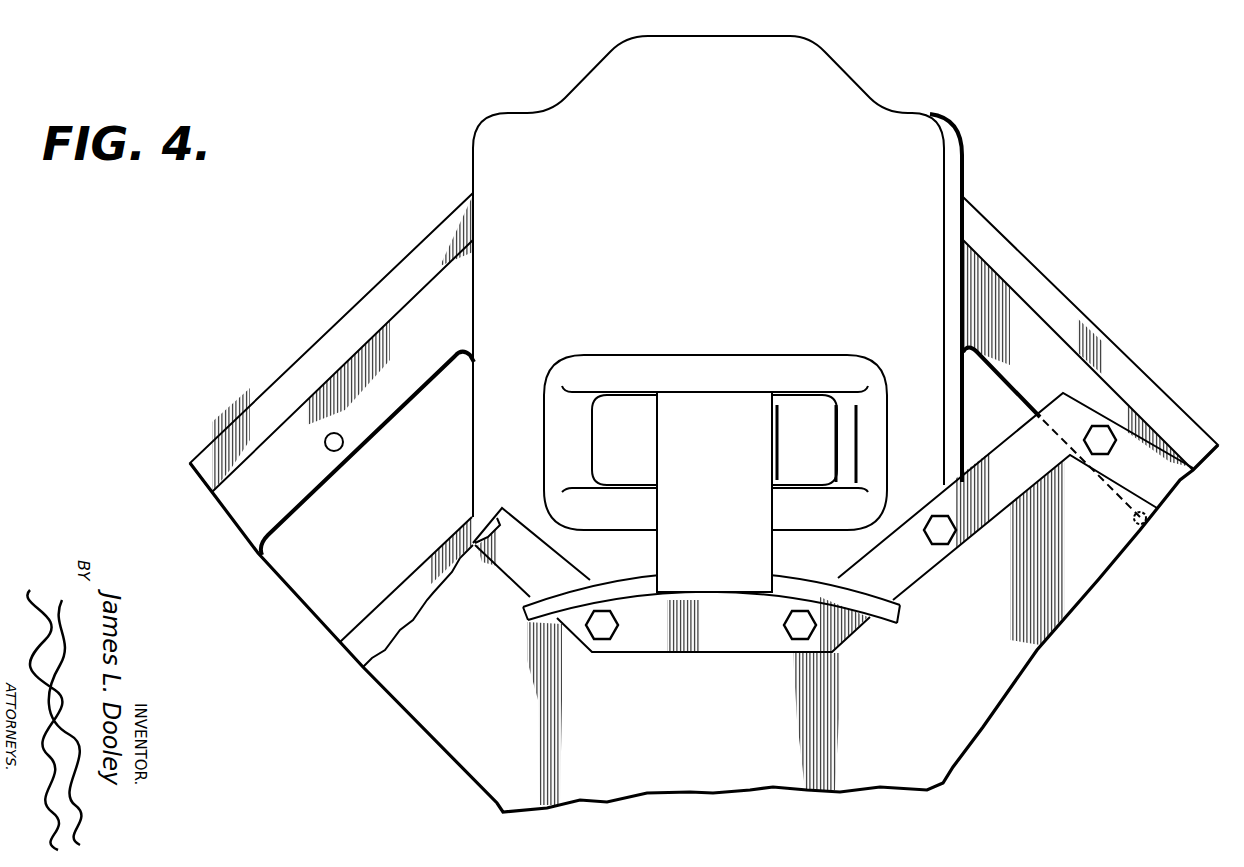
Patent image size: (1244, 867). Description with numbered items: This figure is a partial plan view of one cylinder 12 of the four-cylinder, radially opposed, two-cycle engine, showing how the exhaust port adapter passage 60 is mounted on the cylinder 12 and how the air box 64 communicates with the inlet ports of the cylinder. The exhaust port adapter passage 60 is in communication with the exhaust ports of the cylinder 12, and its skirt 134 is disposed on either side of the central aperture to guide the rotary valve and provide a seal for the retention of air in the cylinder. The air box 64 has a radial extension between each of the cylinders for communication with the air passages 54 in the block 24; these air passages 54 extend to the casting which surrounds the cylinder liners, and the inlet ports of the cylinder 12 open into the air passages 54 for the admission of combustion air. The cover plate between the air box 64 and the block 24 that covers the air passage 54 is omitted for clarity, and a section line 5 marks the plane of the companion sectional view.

The cylinder 12 is at (950, 128).
The section line 5- 5 is at (473, 443).
The block 24 is at (1067, 368).
The air passage 54 is at (267, 560).
The exhaust port adapter passage 60 is at (855, 368).
The air box 64 is at (1082, 557).
The skirt 134 is at (896, 622).